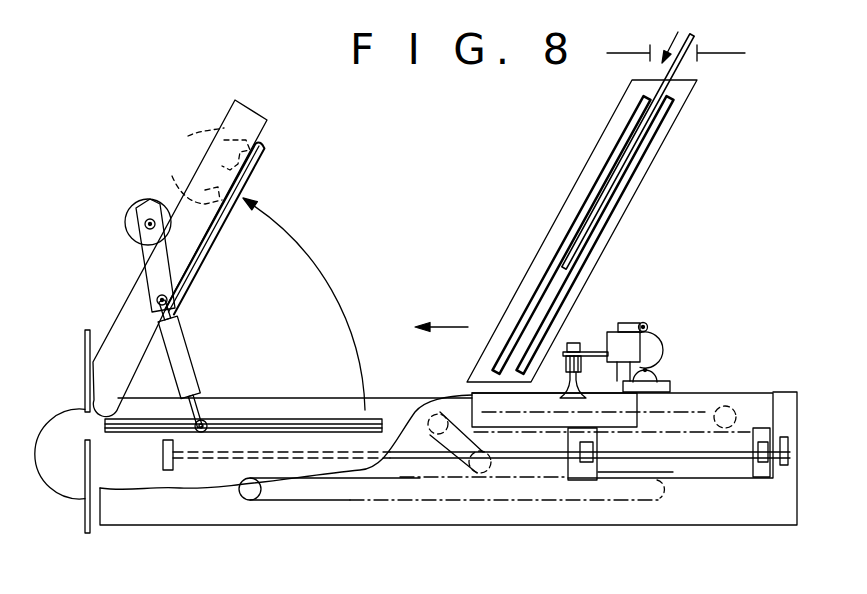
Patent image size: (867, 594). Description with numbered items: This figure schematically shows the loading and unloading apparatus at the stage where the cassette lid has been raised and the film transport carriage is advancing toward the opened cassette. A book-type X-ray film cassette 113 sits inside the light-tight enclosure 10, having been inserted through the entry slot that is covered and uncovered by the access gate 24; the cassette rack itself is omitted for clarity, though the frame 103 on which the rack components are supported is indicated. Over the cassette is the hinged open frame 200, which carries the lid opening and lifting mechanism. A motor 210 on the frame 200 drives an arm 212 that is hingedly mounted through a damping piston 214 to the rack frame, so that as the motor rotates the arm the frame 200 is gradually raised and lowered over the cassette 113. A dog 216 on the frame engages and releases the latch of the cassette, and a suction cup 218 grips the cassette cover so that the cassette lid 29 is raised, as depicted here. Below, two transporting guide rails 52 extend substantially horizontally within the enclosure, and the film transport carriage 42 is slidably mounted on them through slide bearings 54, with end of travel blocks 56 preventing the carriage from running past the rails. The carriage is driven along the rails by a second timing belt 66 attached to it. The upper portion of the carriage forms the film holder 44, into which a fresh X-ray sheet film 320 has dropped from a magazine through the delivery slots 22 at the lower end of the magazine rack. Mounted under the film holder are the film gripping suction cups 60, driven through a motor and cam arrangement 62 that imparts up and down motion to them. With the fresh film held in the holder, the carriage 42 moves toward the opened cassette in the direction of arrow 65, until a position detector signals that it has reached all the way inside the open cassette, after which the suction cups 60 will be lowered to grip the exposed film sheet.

The enclosure 10 is at (84, 350).
The slots 22 is at (688, 62).
The access gate 24 is at (63, 412).
The cassette lid 29 is at (200, 262).
The film transport carriage 42 is at (755, 400).
The film holder 44 is at (643, 182).
The transporting guide rails 52 is at (220, 460).
The slide bearings 54 is at (586, 466).
The end of travel blocks 56 is at (163, 476).
The suction cups 60 is at (578, 345).
The motor and cam arrangement 62 is at (668, 347).
The arrow 65 is at (452, 324).
The second timing belt 66 is at (305, 500).
The frame 103 is at (148, 521).
The cassette 113 is at (147, 433).
The open frame 200 is at (246, 116).
The motor 210 is at (131, 210).
The arm 212 is at (147, 258).
The damping piston 214 is at (183, 355).
The dog 216 is at (188, 136).
The suction cup 218 is at (176, 178).
The X-ray sheet film 320 is at (660, 88).